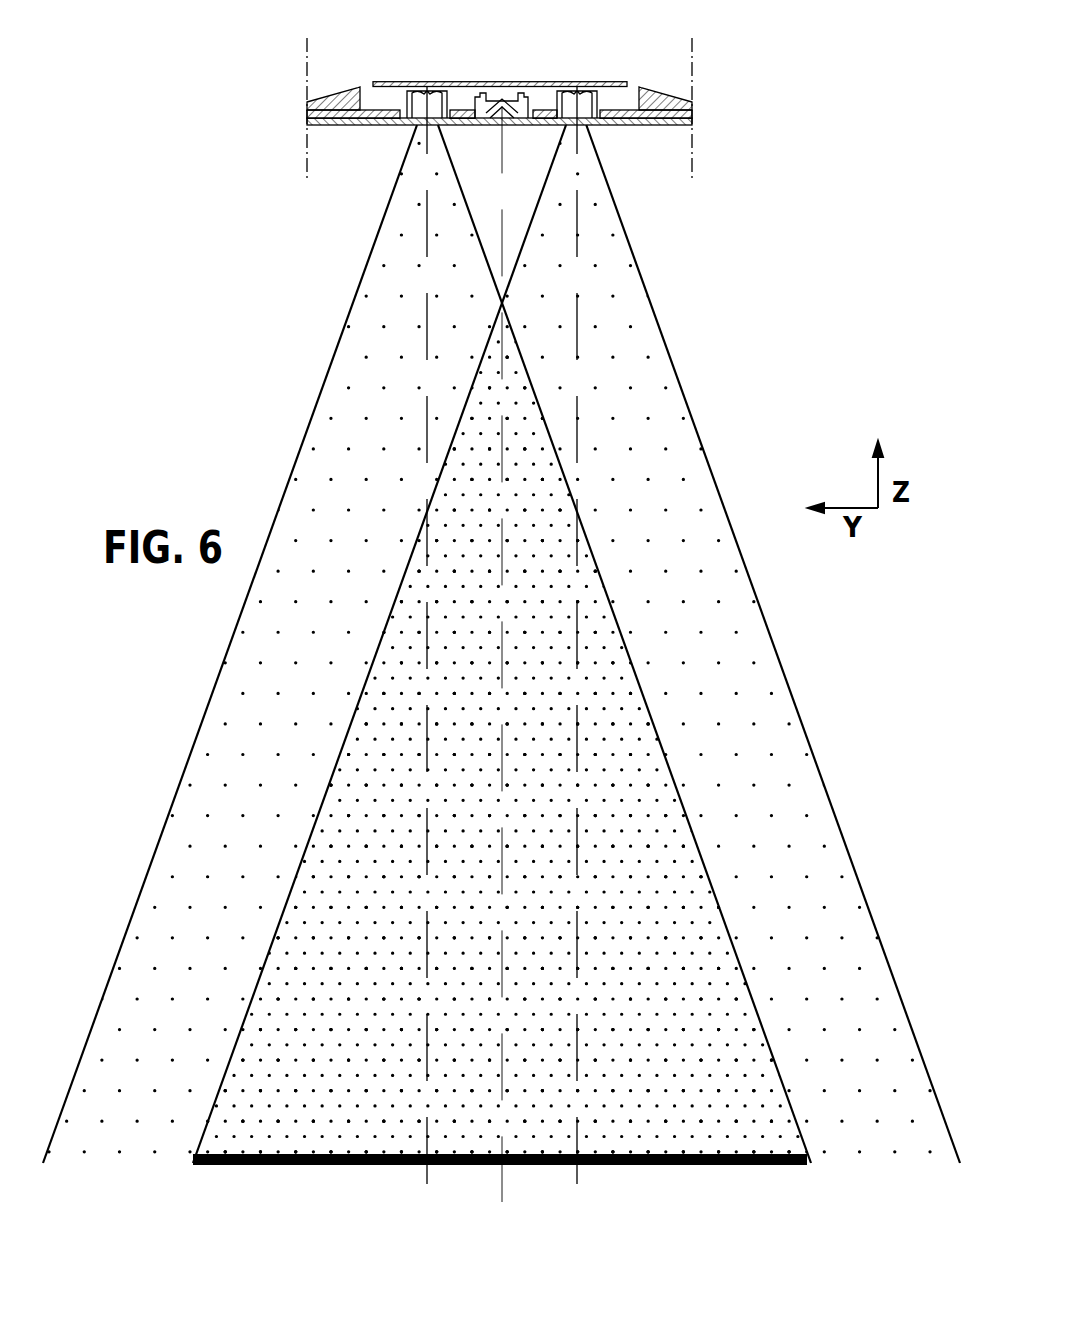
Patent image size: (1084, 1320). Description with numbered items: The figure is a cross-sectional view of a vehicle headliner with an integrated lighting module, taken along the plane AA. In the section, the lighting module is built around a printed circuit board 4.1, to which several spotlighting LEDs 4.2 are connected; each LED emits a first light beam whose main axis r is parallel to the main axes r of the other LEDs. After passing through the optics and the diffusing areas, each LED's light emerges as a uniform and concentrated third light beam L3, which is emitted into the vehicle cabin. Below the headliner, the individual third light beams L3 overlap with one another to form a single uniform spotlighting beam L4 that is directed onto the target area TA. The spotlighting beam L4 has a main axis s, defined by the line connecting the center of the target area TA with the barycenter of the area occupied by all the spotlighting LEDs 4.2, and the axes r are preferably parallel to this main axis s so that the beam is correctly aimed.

The printed circuit board 4.1 is at (618, 82).
The spotlighting LEDs 4.2 is at (577, 82).
The third light beam L3 is at (515, 644).
The spotlighting beam L4 is at (503, 724).
The target area TA is at (500, 1143).
The plane AA is at (230, 44).
The main axis of the first light beam r is at (519, 1192).
The main axis of the spotlighting beam s is at (519, 1194).